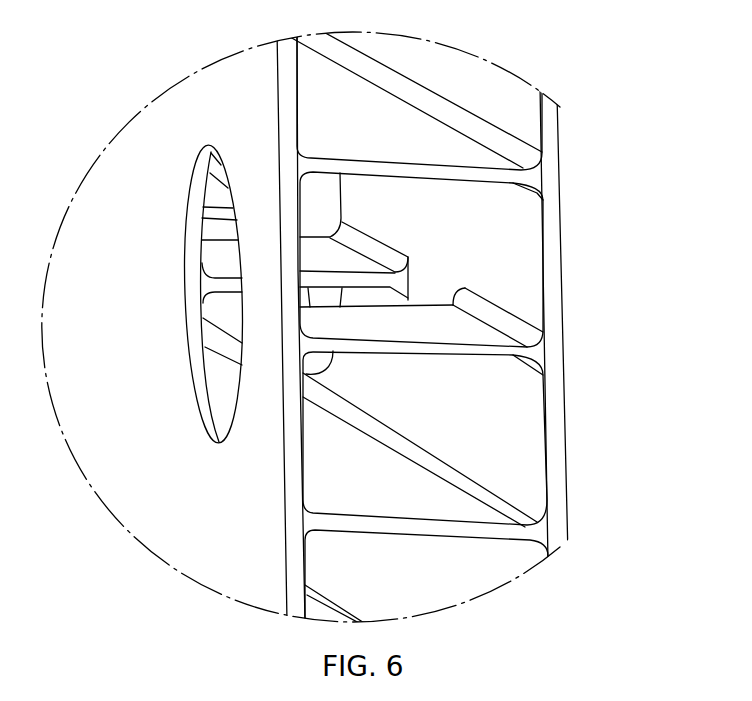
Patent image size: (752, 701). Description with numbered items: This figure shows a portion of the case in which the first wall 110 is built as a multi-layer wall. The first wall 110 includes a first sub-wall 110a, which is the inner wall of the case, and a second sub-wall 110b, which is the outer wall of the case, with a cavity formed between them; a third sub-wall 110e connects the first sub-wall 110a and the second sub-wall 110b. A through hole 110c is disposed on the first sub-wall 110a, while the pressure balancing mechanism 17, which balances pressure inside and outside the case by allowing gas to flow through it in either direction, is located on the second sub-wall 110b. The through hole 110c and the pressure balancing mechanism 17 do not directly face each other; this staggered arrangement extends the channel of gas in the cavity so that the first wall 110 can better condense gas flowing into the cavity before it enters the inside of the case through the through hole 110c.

The first wall 110 is at (242, 93).
The first sub-wall 110a is at (297, 535).
The second sub-wall 110b is at (548, 233).
The through hole 110c is at (192, 230).
The third sub-wall 110e is at (492, 352).
The pressure balancing mechanism 17 is at (338, 192).